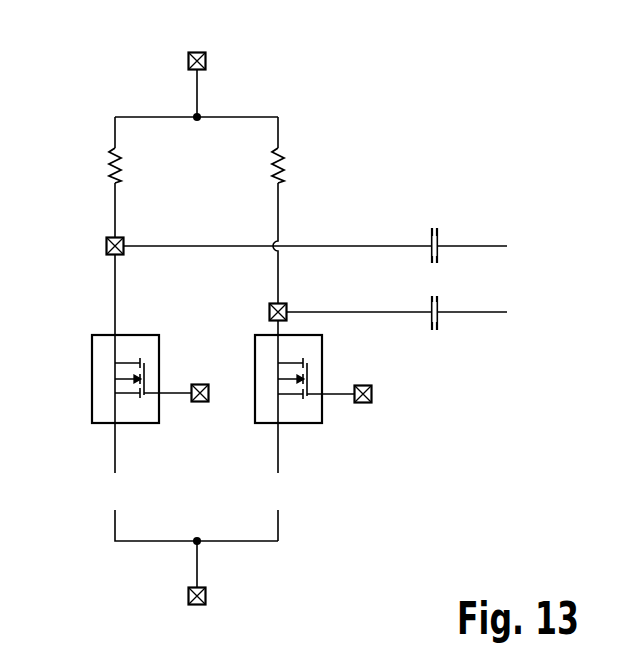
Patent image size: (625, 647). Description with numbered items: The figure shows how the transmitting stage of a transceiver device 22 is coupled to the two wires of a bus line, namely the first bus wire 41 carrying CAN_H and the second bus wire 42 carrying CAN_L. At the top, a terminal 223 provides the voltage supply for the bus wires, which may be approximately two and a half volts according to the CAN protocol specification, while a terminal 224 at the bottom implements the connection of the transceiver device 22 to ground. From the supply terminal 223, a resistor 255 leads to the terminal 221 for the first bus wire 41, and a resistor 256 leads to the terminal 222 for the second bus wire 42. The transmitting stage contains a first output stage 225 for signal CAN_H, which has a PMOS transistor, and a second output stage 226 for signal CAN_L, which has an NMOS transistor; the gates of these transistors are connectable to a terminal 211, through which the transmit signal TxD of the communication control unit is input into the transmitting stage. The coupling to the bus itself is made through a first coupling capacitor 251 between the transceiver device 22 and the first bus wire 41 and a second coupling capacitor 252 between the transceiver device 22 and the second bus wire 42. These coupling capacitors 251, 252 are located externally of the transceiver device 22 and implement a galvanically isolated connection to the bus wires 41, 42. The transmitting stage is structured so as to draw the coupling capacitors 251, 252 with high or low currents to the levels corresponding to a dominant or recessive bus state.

The transceiver device 22 is at (337, 89).
The terminal for the voltage supply 223 is at (206, 61).
The terminal for ground 224 is at (206, 596).
The resistor 255 is at (108, 153).
The resistor 256 is at (286, 156).
The terminal for first bus wire 221 is at (121, 238).
The terminal for second bus wire 222 is at (284, 304).
The first bus wire 41 is at (479, 243).
The second bus wire 42 is at (479, 309).
The first coupling capacitor 251 is at (430, 232).
The second coupling capacitor 252 is at (430, 328).
The first output stage 225 is at (100, 334).
The second output stage 226 is at (262, 334).
The terminal 211 is at (196, 384).